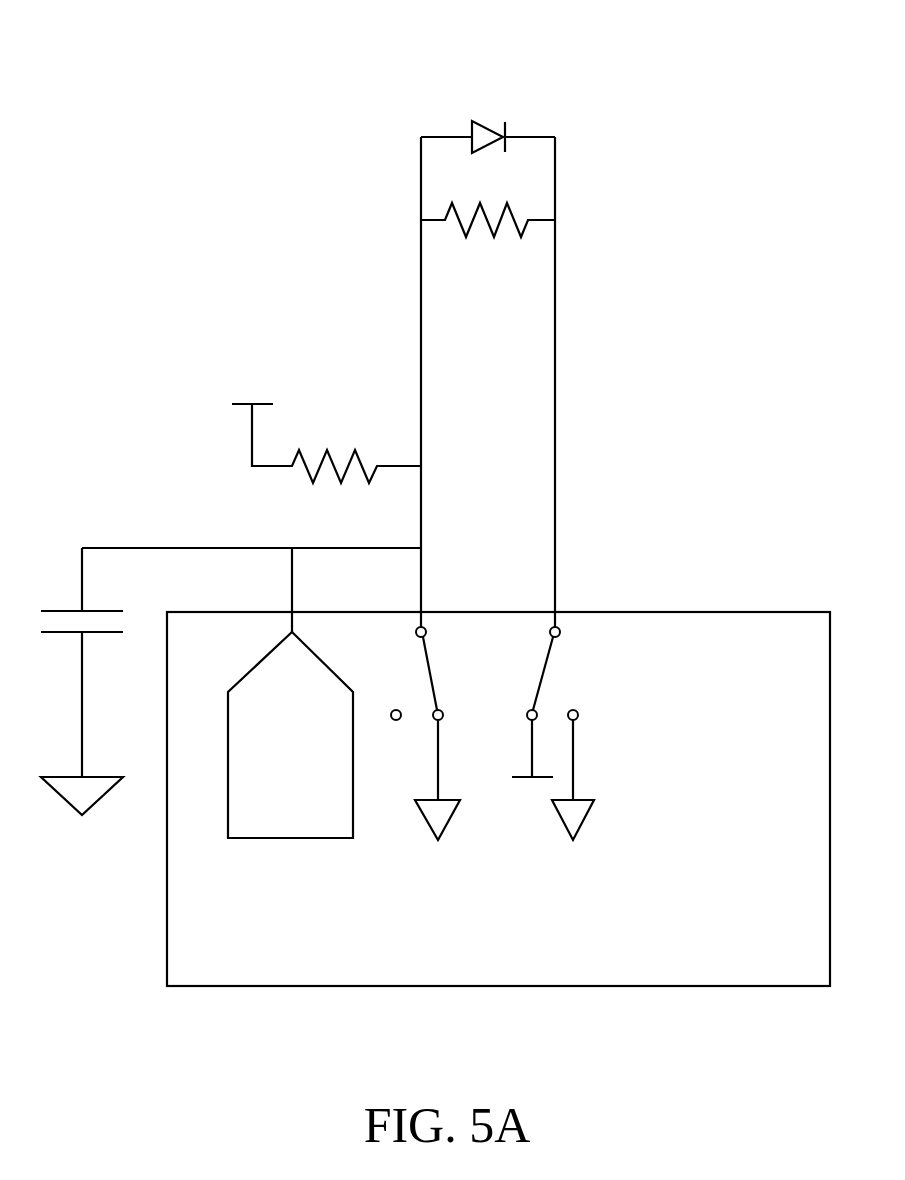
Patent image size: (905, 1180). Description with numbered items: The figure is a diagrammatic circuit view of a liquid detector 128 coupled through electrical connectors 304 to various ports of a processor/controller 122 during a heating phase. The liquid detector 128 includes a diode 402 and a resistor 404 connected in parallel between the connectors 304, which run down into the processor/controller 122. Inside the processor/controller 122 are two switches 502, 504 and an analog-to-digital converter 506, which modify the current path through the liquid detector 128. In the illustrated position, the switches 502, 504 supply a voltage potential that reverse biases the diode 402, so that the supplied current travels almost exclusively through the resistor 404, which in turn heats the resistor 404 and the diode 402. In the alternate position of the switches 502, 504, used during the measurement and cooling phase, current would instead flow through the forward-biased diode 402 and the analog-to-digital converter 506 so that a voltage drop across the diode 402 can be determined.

The liquid detector 128 is at (230, 143).
The diode 402 is at (482, 122).
The resistor 404 is at (527, 228).
The electrical connector 304 is at (555, 473).
The switch 504 is at (432, 675).
The switch 502 is at (543, 673).
The analog-to-digital converter 506 is at (290, 735).
The processor/controller 122 is at (498, 799).